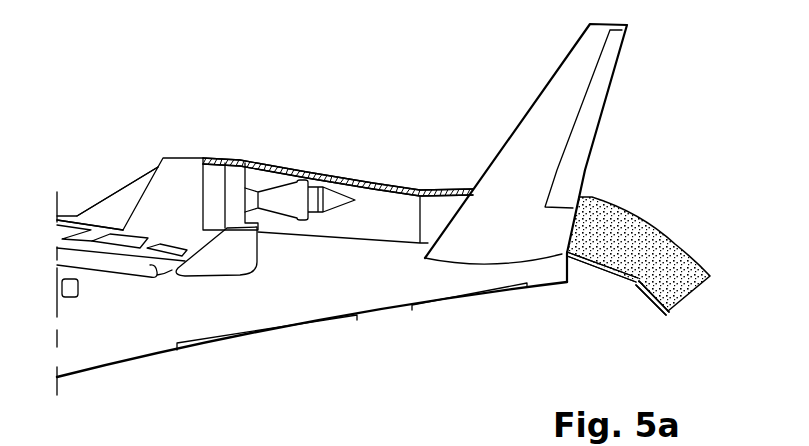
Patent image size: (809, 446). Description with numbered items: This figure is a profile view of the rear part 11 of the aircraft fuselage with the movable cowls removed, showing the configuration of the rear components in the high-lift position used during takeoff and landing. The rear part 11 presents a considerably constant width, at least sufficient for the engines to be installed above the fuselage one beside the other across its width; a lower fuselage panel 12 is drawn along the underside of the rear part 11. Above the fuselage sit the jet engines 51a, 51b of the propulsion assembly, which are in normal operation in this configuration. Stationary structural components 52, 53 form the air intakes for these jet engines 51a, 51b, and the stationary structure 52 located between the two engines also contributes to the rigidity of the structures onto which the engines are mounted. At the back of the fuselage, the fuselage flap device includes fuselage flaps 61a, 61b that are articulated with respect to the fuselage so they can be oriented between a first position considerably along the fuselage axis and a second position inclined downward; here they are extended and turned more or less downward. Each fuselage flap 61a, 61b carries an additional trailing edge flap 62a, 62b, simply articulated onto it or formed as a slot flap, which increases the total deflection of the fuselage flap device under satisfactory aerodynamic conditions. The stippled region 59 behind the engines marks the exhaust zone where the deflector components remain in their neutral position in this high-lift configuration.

The rear part 11 is at (241, 355).
The fuselage panel 12 is at (447, 298).
The jet engine 51a is at (222, 162).
The jet engine 51b is at (222, 162).
The stationary structural component 52 is at (118, 200).
The stationary structural component 53 is at (185, 167).
The thrust vectoring nozzle 59 is at (630, 222).
The fuselage flap 61a is at (570, 257).
The fuselage flap 61b is at (570, 257).
The additional trailing edge flap 62a is at (641, 286).
The additional trailing edge flap 62b is at (641, 286).